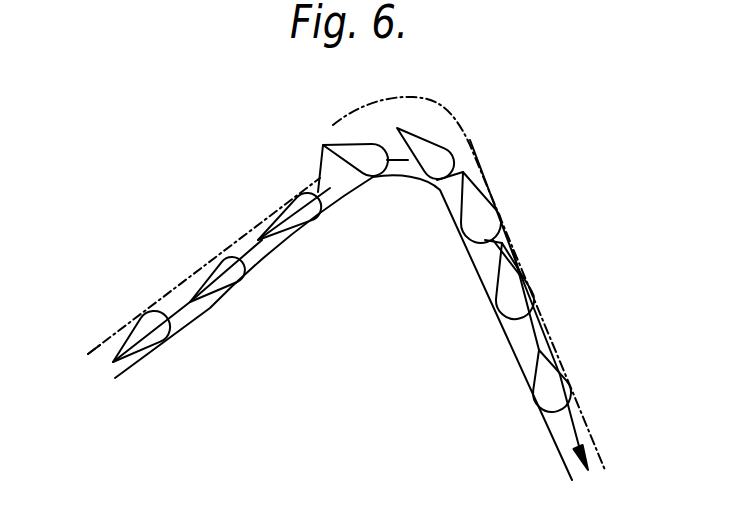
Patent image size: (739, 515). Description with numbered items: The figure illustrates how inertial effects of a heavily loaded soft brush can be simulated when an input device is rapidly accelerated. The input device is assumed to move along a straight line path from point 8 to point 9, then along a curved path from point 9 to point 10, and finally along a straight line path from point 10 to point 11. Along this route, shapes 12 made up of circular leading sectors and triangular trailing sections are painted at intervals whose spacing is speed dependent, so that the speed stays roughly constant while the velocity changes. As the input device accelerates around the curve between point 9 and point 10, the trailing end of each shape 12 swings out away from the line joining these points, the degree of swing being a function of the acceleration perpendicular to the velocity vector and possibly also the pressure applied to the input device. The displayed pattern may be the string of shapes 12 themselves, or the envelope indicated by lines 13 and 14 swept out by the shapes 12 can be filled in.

The point 8 is at (122, 383).
The point 9 is at (320, 167).
The point 10 is at (458, 200).
The point 11 is at (562, 415).
The shape 12 is at (220, 258).
The line 13 is at (243, 238).
The line 14 is at (287, 248).